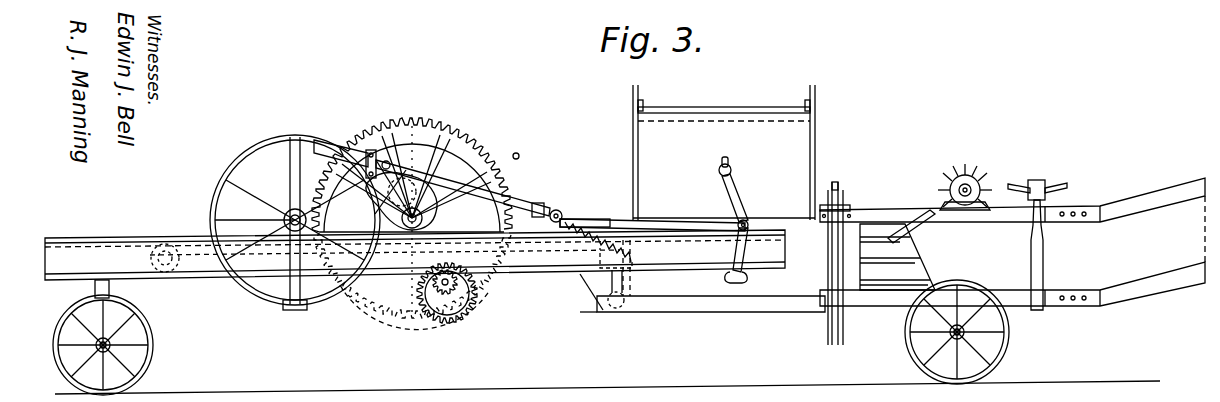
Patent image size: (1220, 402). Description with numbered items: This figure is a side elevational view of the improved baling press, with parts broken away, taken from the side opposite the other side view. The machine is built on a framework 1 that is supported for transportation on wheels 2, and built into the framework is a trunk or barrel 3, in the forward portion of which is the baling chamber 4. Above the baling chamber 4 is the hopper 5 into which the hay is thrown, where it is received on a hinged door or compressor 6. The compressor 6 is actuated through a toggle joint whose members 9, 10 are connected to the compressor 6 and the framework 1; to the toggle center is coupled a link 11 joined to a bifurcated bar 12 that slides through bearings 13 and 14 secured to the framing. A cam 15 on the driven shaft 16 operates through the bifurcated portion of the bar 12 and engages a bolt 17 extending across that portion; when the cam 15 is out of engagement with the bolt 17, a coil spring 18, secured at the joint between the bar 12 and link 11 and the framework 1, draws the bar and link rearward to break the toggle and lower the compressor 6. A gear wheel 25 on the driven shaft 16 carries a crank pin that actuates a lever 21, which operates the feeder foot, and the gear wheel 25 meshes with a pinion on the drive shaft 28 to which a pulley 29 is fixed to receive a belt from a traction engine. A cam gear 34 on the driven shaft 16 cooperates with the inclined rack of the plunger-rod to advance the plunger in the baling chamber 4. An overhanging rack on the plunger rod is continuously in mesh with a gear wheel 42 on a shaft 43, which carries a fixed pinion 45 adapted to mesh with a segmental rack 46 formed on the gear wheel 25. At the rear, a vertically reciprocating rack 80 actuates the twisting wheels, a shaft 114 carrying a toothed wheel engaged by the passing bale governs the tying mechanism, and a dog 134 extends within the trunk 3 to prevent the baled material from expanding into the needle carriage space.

The framework 1 is at (133, 244).
The wheels 2 is at (957, 341).
The trunk or barrel 3 is at (1078, 232).
The baling chamber 4 is at (410, 116).
The hopper 5 is at (195, 342).
The door or compressor 6 is at (812, 132).
The toggle joint member 9 is at (740, 198).
The toggle joint member 10 is at (750, 250).
The link 11 is at (702, 219).
The bifurcated bar 12 is at (536, 200).
The bearing 13 is at (362, 132).
The bearing 14 is at (556, 208).
The cam 15 is at (420, 150).
The driven shaft 16 is at (413, 186).
The bolt 17 is at (392, 160).
The coil spring 18 is at (632, 258).
The lever 21 is at (598, 217).
The gear wheel 25 is at (470, 130).
The drive shaft 28 is at (282, 217).
The pulley 29 is at (282, 304).
The cam gear 34 is at (478, 160).
The gear wheel 42 is at (472, 308).
The shaft 43 is at (462, 283).
The fixed pinion 45 is at (405, 318).
The segmental rack 46 is at (520, 154).
The vertically reciprocating rack 80 is at (840, 326).
The shaft 114 is at (972, 166).
The dog 134 is at (895, 310).